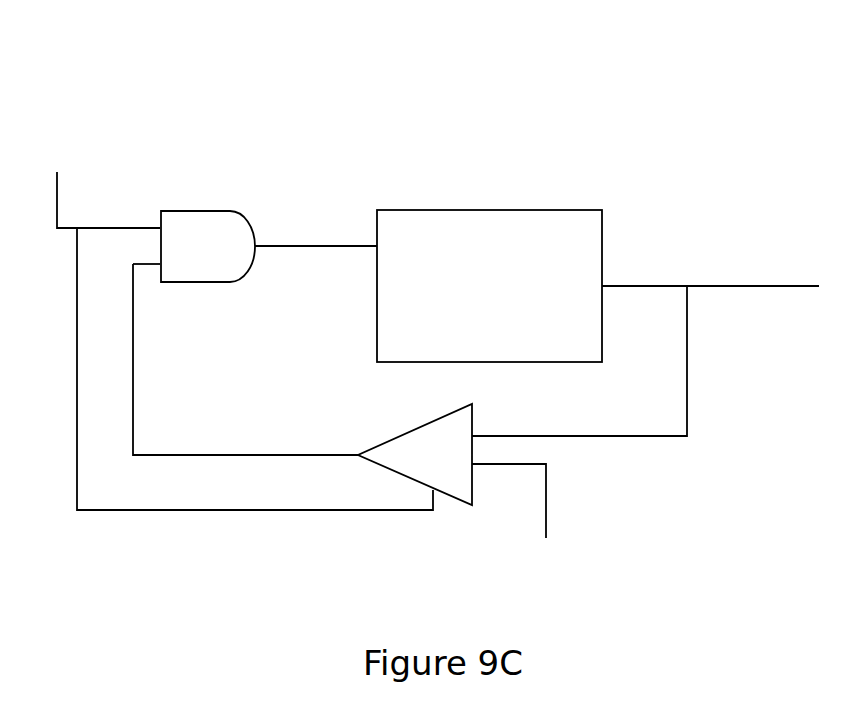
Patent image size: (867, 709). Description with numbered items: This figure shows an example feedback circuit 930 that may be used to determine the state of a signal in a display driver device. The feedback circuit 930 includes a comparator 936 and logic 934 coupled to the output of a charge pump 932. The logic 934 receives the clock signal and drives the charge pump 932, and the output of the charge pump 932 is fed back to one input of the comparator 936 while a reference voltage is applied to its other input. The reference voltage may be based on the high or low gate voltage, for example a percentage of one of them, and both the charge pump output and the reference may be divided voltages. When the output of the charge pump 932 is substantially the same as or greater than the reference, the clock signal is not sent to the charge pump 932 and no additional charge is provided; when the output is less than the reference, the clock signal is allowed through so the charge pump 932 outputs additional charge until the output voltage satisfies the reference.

The feedback circuit 930 is at (142, 65).
The charge pump 932 is at (489, 286).
The logic 934 is at (208, 246).
The comparator 936 is at (415, 454).